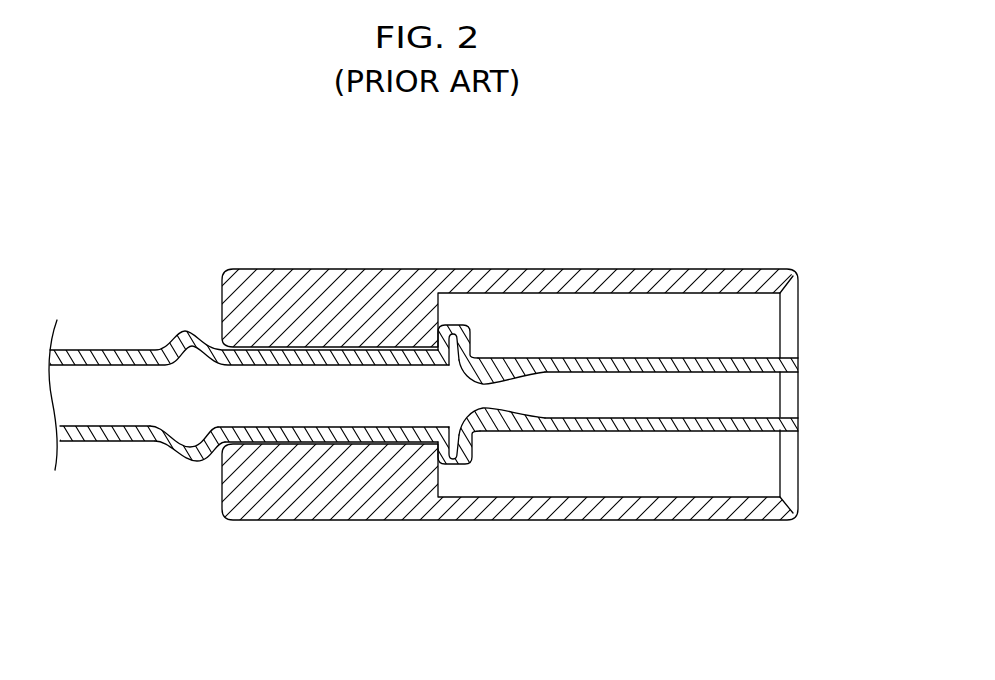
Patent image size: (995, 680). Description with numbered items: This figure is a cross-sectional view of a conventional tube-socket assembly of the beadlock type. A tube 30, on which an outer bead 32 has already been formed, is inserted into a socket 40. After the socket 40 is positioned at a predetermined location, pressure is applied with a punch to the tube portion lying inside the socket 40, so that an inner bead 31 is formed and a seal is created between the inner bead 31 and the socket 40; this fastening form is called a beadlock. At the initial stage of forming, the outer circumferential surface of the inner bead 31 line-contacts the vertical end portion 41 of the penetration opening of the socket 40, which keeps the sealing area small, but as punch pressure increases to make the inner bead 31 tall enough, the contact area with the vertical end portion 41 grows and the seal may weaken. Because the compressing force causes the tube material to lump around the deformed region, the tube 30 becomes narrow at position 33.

The tube 30 is at (791, 365).
The inner bead 31 is at (462, 466).
The outer bead 32 is at (190, 462).
The position where the tube becomes narrow 33 is at (490, 397).
The socket 40 is at (754, 280).
The vertical end portion of a penetration opening of the socket 41 is at (470, 352).